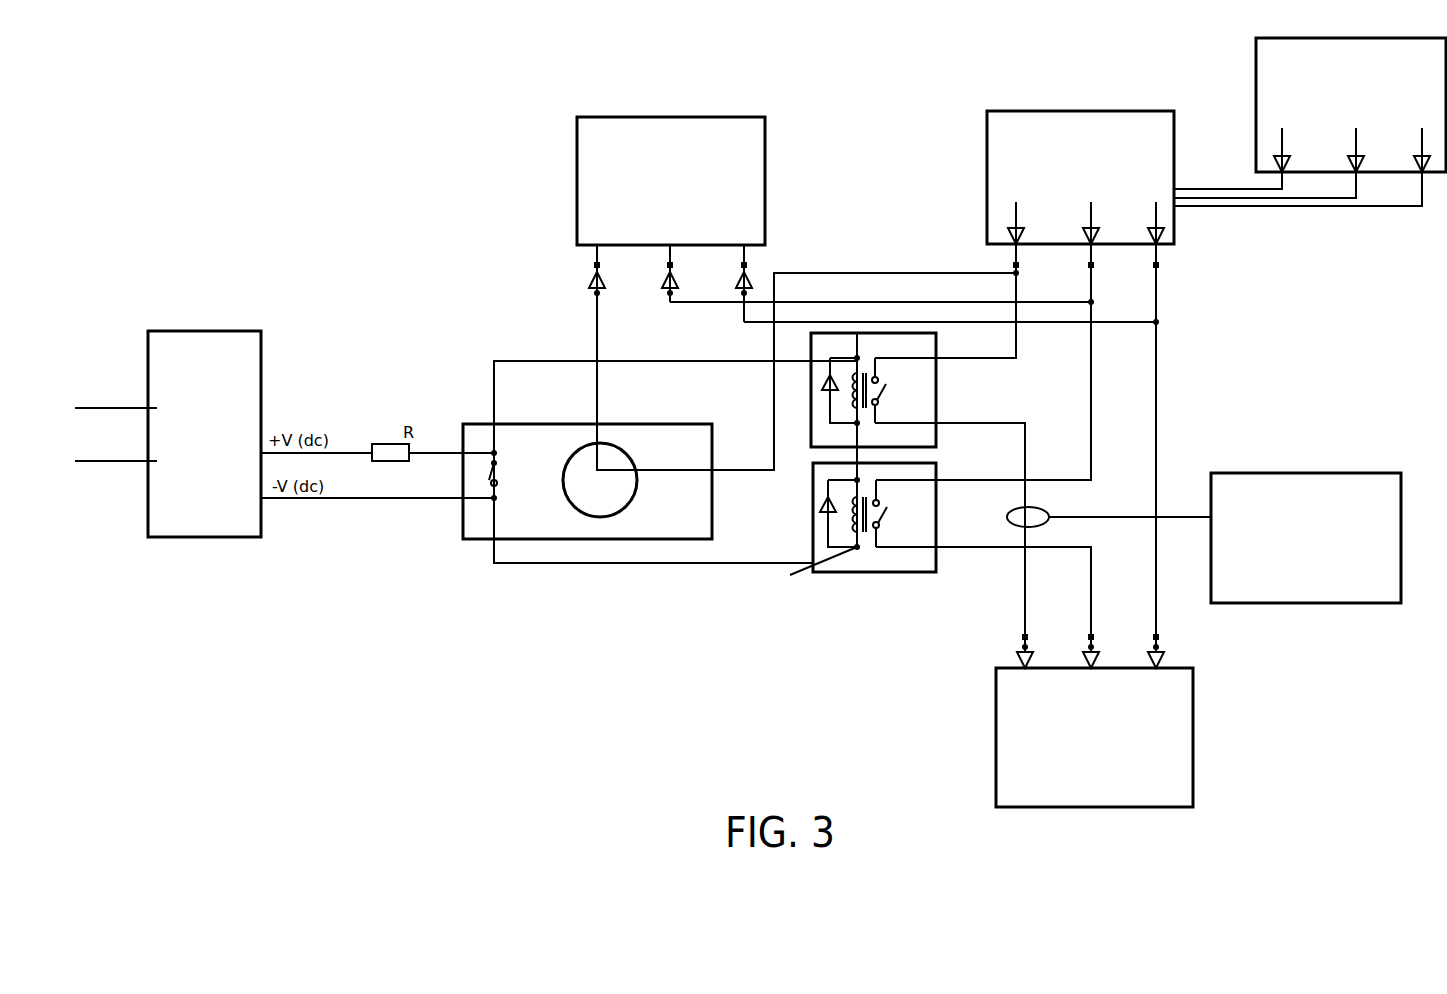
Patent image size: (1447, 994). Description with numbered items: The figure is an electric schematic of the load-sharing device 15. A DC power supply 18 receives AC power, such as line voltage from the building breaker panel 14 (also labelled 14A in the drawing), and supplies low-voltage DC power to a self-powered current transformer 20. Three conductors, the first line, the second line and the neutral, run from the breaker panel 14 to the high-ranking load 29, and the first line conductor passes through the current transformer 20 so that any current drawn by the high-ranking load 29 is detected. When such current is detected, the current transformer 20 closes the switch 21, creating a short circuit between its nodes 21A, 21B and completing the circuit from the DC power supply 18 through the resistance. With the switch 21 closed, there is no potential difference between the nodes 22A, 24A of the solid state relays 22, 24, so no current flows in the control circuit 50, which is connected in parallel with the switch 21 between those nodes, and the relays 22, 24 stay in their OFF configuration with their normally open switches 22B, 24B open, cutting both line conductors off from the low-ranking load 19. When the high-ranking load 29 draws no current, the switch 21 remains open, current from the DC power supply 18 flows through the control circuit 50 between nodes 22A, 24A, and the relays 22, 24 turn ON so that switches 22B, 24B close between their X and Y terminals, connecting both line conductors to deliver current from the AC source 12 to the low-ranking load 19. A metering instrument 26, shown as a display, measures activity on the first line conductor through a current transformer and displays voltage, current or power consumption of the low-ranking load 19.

The AC source 12 is at (1256, 102).
The building breaker panel 14 is at (1054, 152).
The panel feeder breaker 14A is at (1030, 111).
The load-sharing device 15 is at (305, 155).
The DC power supply 18 is at (232, 331).
The low-ranking load 19 is at (996, 698).
The current transformer 20 is at (550, 424).
The switch 21 is at (429, 455).
The node of switch 21A is at (494, 453).
The node of switch 21B is at (494, 500).
The relay 22 is at (904, 392).
The node of relay 22A is at (857, 358).
The switch of relay 22B is at (878, 403).
The relay 24 is at (839, 556).
The node of relay 24A is at (790, 575).
The switch of relay 24B is at (881, 528).
The metering instrument 26 is at (1238, 473).
The high-ranking load 29 is at (605, 117).
The control circuit 50 is at (582, 360).